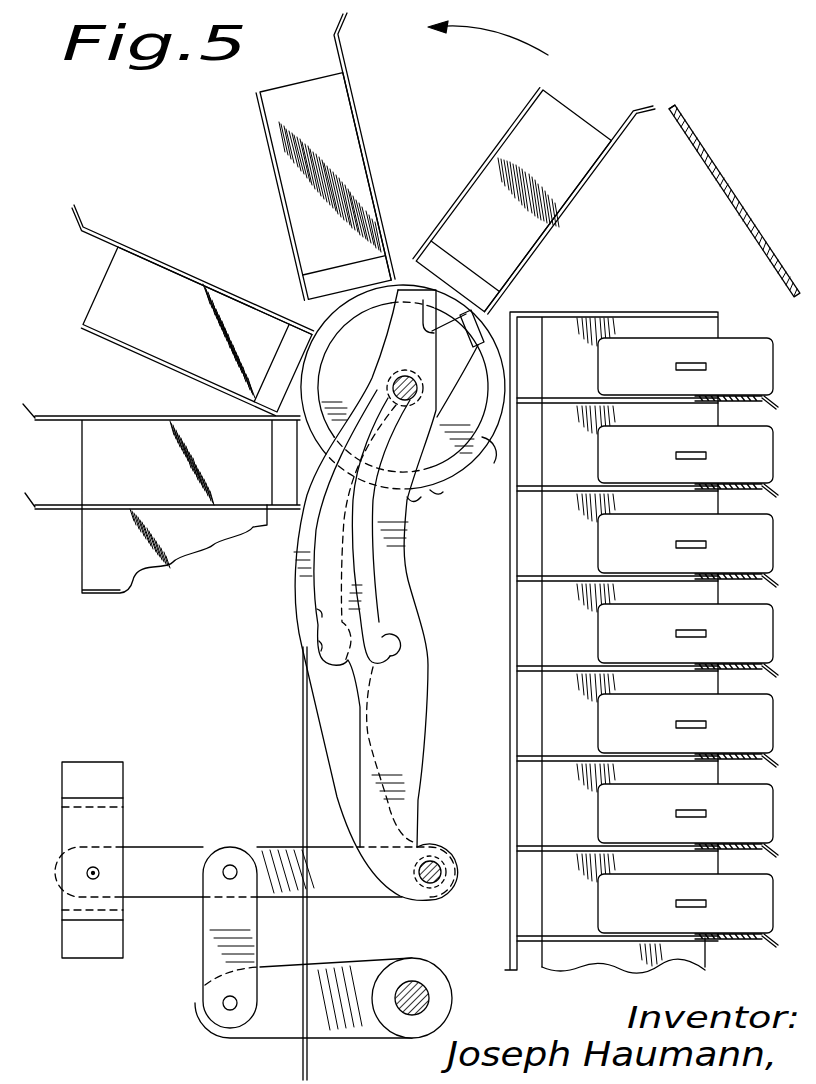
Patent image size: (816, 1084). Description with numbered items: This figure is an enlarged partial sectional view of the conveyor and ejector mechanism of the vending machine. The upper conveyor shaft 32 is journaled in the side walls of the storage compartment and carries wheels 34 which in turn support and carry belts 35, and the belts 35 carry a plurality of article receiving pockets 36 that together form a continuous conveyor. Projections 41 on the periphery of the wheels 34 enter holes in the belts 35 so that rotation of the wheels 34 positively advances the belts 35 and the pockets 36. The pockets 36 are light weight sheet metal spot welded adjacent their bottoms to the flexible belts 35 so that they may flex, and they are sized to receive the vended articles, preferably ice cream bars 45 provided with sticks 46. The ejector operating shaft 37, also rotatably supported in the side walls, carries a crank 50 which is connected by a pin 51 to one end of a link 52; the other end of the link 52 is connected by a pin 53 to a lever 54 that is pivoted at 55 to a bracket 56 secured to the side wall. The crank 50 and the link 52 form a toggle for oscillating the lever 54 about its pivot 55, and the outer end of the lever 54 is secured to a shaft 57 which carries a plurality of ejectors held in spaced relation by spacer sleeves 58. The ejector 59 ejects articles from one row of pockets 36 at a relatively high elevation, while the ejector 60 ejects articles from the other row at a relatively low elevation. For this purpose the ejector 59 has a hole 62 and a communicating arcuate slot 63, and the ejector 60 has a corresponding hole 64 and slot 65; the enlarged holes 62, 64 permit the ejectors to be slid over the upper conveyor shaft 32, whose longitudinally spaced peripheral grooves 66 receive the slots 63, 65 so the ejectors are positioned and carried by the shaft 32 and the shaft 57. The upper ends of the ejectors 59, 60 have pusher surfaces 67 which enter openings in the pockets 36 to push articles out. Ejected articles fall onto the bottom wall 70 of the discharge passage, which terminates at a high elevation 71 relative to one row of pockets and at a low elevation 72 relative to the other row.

The upper conveyor shaft 32 is at (416, 396).
The wheel 34 is at (440, 482).
The belt 35 is at (496, 320).
The article receiving pocket 36 is at (456, 203).
The ejector operating shaft 37 is at (418, 990).
The projection 41 is at (490, 462).
The ice cream bar 45 is at (736, 342).
The stick 46 is at (685, 364).
The crank 50 is at (357, 967).
The pivot pin 51 is at (225, 1004).
The link 52 is at (217, 940).
The pin 53 is at (232, 866).
The lever 54 is at (182, 858).
The pivot 55 is at (88, 873).
The bracket 56 is at (72, 823).
The shaft 57 is at (438, 862).
The spacer sleeve 58 is at (456, 862).
The ejector 59 is at (408, 722).
The ejector 60 is at (335, 726).
The hole 62 is at (397, 655).
The arcuate slot 63 is at (377, 603).
The hole 64 is at (322, 645).
The slot 65 is at (320, 613).
The peripheral groove 66 is at (423, 383).
The pusher surface 67 is at (423, 333).
The bottom wall 70 is at (735, 194).
The high elevation 71 is at (672, 107).
The low elevation 72 is at (762, 233).